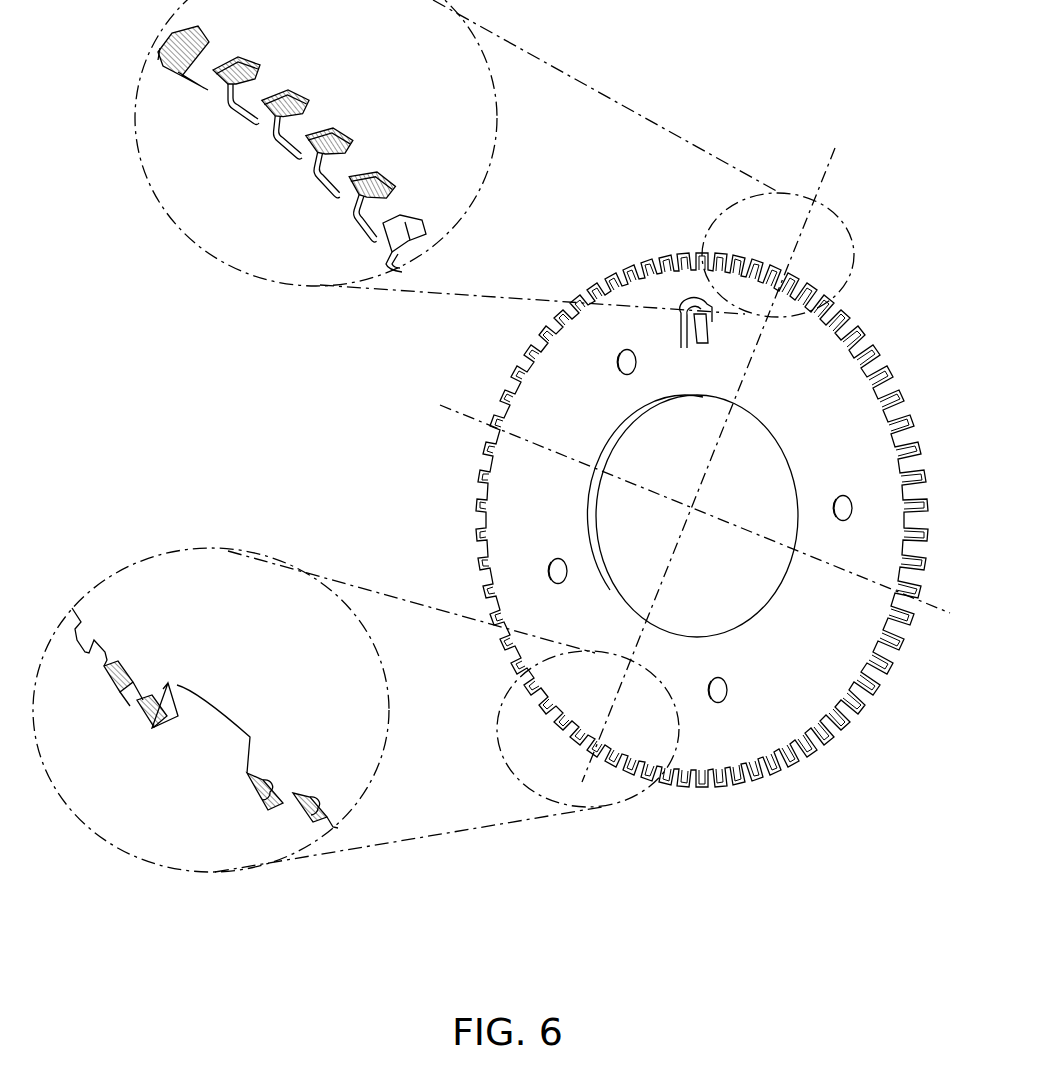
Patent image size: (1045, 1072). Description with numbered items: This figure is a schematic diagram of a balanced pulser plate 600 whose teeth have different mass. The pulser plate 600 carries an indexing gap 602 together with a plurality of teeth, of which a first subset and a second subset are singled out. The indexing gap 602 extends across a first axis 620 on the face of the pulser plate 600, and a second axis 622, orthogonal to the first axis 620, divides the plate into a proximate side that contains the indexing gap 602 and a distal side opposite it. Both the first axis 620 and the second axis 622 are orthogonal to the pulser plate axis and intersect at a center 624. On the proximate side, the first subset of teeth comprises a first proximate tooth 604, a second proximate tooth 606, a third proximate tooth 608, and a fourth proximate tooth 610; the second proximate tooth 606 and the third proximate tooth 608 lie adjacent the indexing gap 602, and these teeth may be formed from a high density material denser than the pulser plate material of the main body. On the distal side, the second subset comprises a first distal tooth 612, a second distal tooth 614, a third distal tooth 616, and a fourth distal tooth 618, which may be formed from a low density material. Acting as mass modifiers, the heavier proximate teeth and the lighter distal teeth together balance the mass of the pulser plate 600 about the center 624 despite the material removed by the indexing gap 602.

The pulser plate 600 is at (790, 66).
The indexing gap 602 is at (200, 757).
The first proximate tooth 604 is at (105, 680).
The second proximate tooth 606 is at (142, 718).
The third proximate tooth 608 is at (247, 803).
The fourth proximate tooth 610 is at (293, 818).
The first distal tooth 612 is at (251, 50).
The second distal tooth 614 is at (292, 86).
The third distal tooth 616 is at (340, 126).
The fourth distal tooth 618 is at (380, 173).
The first axis 620 is at (822, 178).
The second axis 622 is at (463, 422).
The center 624 is at (692, 511).